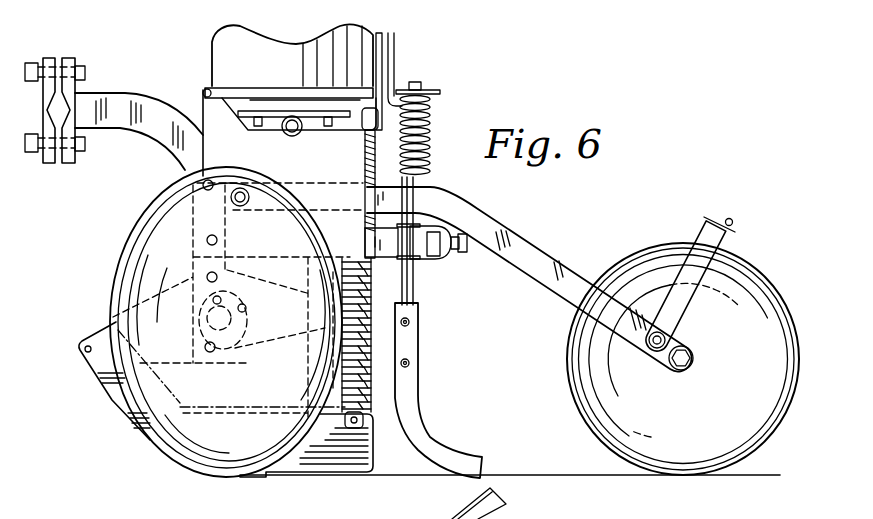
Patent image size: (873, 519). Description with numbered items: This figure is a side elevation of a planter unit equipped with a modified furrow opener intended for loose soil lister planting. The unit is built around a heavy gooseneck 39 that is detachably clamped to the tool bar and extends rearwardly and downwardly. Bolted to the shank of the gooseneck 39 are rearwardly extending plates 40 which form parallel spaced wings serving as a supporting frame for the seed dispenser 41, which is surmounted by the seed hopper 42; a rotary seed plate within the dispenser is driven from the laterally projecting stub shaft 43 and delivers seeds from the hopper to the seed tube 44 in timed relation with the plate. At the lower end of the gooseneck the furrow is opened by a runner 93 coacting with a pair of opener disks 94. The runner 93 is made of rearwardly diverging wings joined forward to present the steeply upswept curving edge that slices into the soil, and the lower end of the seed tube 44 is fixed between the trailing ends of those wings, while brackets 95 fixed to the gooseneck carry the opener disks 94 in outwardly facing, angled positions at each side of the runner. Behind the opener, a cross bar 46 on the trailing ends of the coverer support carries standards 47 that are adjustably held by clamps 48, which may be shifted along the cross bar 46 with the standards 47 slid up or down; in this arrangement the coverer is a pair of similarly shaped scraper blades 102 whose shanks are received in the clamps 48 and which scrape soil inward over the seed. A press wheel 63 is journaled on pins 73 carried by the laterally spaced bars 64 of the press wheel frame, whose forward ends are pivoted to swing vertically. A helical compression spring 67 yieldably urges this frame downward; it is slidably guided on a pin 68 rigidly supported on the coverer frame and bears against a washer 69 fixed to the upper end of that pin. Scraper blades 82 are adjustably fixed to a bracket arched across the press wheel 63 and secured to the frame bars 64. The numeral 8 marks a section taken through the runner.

The section line 8- 8 is at (68, 290).
The gooseneck 39 is at (119, 96).
The plates 40 is at (185, 171).
The seed dispenser 41 is at (240, 126).
The seed hopper 42 is at (230, 50).
The stub shaft 43 is at (288, 134).
The seed tube 44 is at (366, 337).
The cross bar 46 is at (441, 227).
The standards 47 is at (417, 292).
The clamps 48 is at (422, 241).
The press wheel 63 is at (657, 232).
The bars 64 is at (530, 252).
The helical compression spring 67 is at (432, 111).
The pin 68 is at (423, 84).
The washer 69 is at (441, 94).
The pins 73 is at (693, 357).
The scraper blades 82 is at (743, 252).
The runner 93 is at (128, 405).
The opener disks 94 is at (238, 460).
The brackets 95 is at (244, 353).
The scraper blades 102 is at (433, 441).